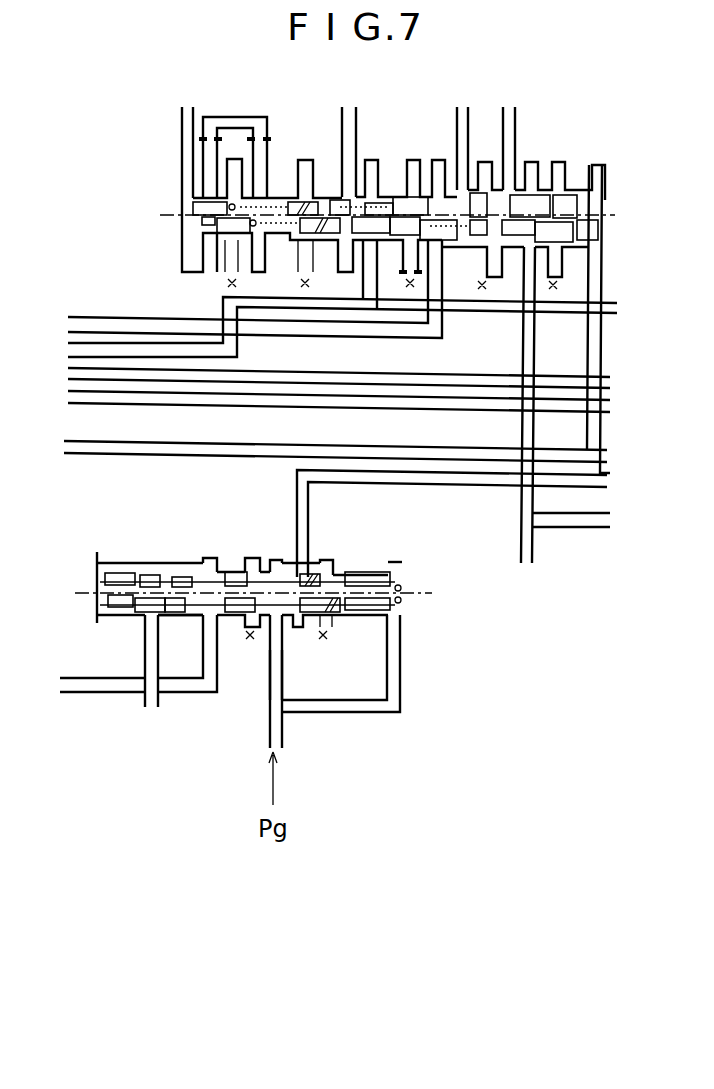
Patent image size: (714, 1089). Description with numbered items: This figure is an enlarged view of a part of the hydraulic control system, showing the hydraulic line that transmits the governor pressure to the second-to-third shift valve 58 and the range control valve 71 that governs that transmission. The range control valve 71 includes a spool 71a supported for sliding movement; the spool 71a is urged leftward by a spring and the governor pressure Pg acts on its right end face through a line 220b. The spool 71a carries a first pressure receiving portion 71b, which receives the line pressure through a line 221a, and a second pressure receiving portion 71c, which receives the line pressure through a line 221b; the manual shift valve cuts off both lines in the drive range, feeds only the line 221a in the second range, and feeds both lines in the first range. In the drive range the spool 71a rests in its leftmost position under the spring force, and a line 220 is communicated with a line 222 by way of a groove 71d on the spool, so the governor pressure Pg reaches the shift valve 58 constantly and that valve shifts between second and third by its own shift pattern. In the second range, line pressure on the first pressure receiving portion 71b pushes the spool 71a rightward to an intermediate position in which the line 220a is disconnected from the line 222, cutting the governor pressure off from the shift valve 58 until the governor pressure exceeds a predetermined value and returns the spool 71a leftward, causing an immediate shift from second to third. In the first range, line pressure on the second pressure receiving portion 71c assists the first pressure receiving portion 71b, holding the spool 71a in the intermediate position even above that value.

The 2-3 shift valve 58 is at (158, 167).
The range control valve 71 is at (387, 545).
The spool 71a is at (376, 612).
The first pressure receiving portion 71b is at (173, 619).
The second pressure receiving portion 71c is at (220, 562).
The groove 71d is at (309, 578).
The line 222 is at (297, 493).
The line 220 is at (282, 736).
The line 220a is at (270, 677).
The line 220b is at (398, 691).
The line 221a is at (150, 706).
The line 221b is at (68, 700).